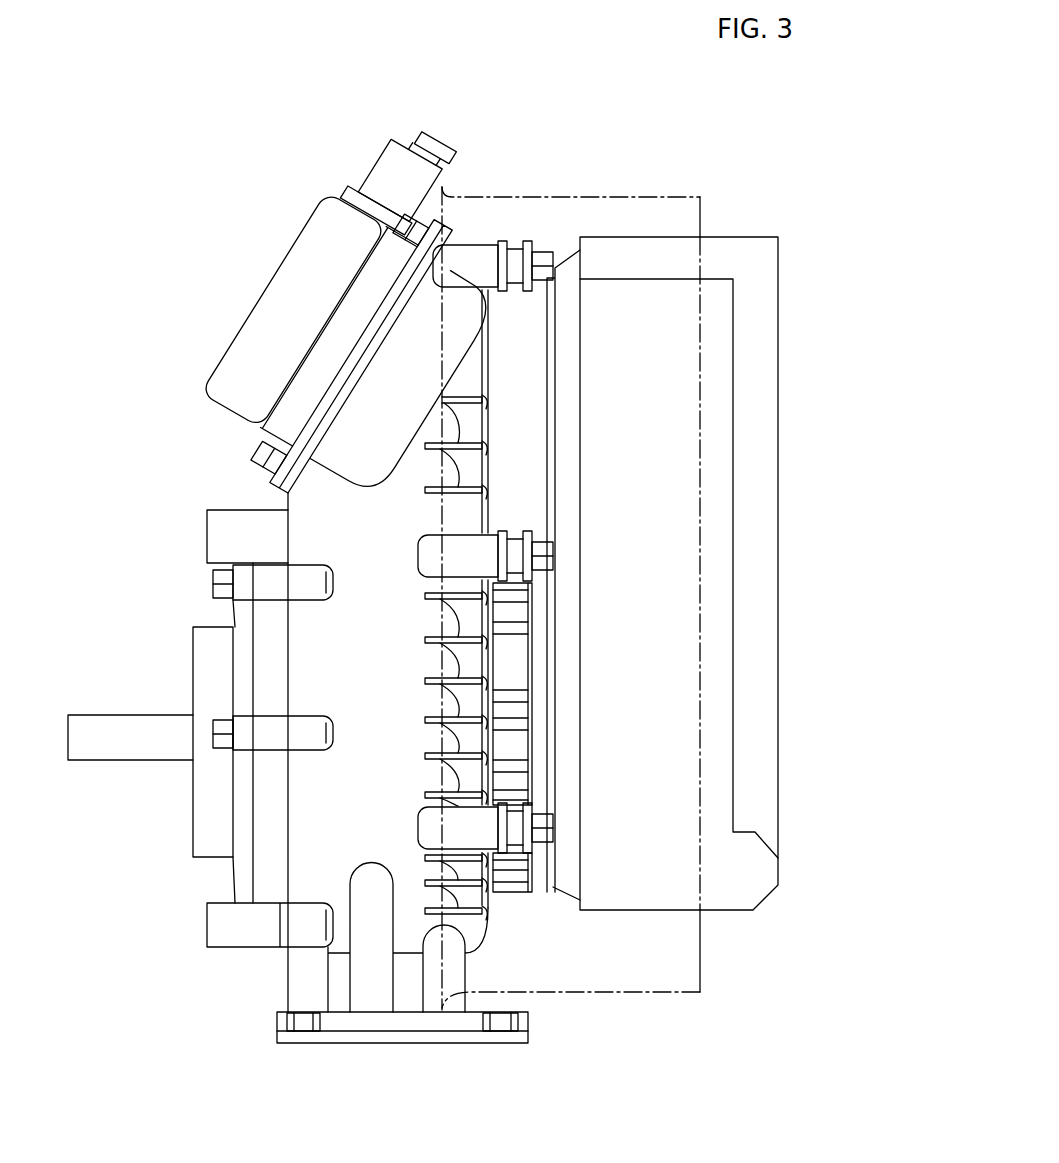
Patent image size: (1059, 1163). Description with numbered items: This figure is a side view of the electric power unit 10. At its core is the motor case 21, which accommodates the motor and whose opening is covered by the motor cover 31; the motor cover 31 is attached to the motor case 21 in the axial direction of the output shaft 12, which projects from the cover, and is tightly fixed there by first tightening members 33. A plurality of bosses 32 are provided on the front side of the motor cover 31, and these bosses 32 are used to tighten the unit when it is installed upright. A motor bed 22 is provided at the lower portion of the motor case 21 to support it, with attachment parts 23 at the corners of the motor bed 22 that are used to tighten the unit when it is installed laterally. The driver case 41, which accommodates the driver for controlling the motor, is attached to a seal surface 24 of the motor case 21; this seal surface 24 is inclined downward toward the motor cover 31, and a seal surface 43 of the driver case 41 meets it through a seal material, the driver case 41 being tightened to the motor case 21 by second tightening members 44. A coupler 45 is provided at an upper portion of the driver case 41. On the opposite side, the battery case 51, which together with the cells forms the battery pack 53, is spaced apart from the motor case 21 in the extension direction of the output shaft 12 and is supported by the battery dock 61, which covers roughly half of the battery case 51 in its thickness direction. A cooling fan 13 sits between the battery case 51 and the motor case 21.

The electric power unit 10 is at (185, 130).
The output shaft 12 is at (97, 714).
The cooling fan 13 is at (510, 895).
The motor case 21 is at (337, 662).
The motor bed 22 is at (392, 1046).
The attachment parts 23 is at (457, 1022).
The seal surface 24 is at (347, 373).
The motor cover 31 is at (207, 810).
The bosses 32 is at (207, 533).
The first tightening members 33 is at (210, 588).
The driver case 41 is at (267, 273).
The seal surface 43 is at (367, 280).
The second tightening members 44 is at (390, 240).
The coupler 45 is at (405, 135).
The battery case 51 is at (780, 298).
The battery pack 53 is at (790, 386).
The battery dock 61 is at (667, 192).